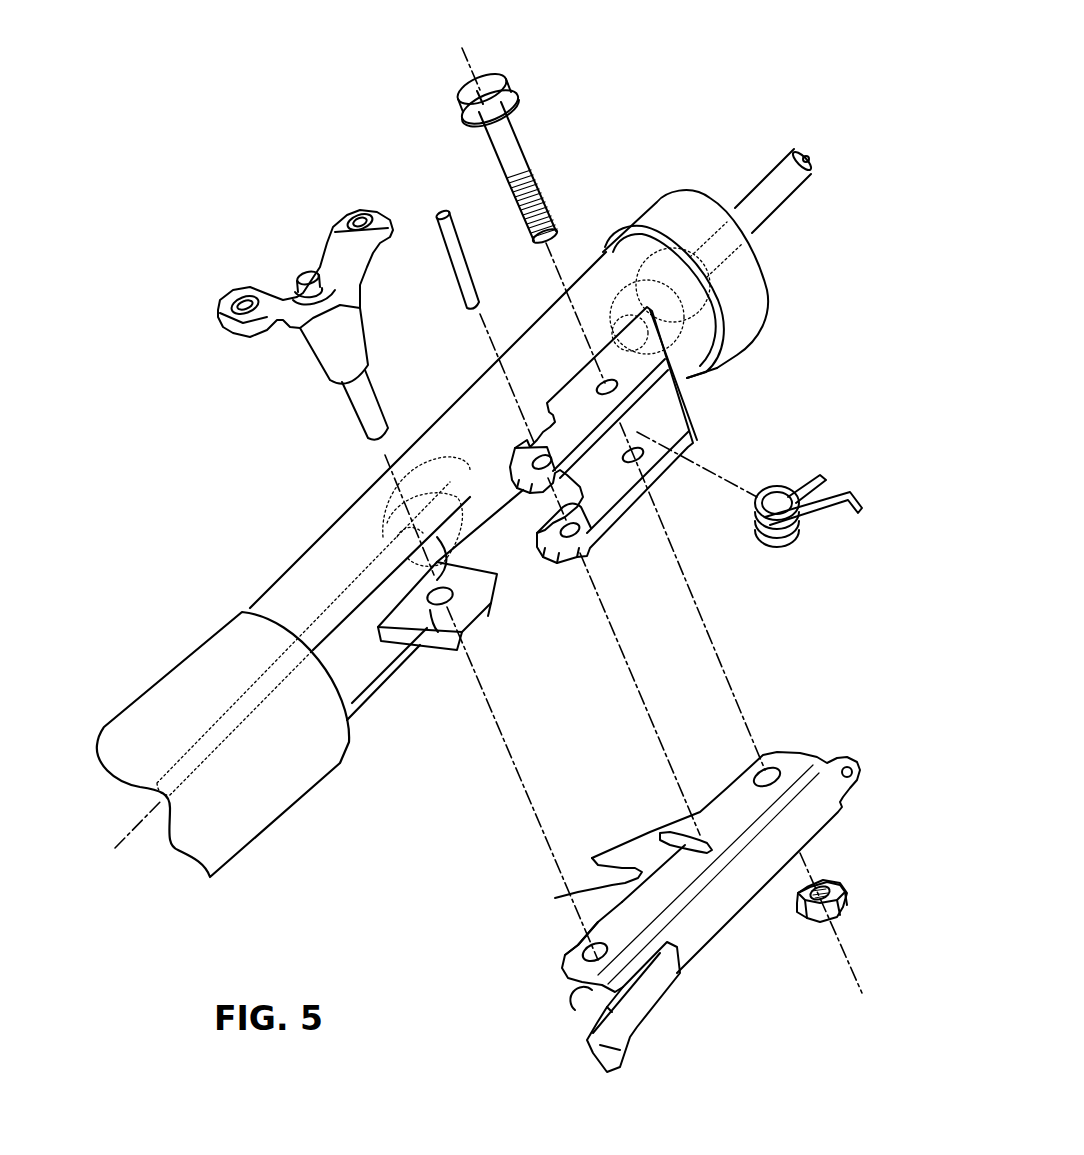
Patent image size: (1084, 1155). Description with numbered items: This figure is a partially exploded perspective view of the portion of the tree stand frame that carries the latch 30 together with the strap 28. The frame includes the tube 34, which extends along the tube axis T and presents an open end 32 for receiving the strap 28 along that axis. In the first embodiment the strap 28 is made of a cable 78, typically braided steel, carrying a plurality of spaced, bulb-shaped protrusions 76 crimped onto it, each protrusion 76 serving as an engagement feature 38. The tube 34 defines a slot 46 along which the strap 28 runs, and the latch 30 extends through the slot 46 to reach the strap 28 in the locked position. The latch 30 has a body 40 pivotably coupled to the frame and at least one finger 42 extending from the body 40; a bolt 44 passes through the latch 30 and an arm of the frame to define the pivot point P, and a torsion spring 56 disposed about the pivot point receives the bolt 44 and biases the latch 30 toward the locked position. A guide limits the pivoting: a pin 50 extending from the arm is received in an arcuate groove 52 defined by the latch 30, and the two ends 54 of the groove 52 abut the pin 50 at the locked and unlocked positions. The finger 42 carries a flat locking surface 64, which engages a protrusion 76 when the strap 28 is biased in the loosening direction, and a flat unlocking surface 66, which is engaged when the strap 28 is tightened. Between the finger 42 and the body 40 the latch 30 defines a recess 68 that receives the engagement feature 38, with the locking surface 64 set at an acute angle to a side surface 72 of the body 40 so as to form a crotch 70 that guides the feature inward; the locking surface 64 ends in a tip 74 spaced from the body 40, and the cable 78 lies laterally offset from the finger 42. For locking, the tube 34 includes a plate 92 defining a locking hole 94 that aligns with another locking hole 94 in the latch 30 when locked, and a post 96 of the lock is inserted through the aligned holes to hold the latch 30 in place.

The strap 28 is at (789, 164).
The latch 30 is at (820, 817).
The open end 32 is at (702, 178).
The tube 34 is at (455, 428).
The engagement feature 38 is at (322, 518).
The body 40 is at (660, 893).
The finger 42 is at (590, 858).
The bolt 44 is at (512, 152).
The slot 46 is at (500, 537).
The pin 50 is at (448, 232).
The groove 52 is at (537, 964).
The ends 54 is at (697, 844).
The spring 56 is at (812, 478).
The locking surface 64 is at (558, 833).
The unlocking surface 66 is at (657, 830).
The recess 68 is at (537, 964).
The crotch 70 is at (558, 833).
The side surface 72 is at (586, 912).
The tip 74 is at (558, 833).
The protrusion 76 is at (375, 517).
The cable 78 is at (803, 170).
The plate 92 is at (420, 640).
The locking hole 94 is at (435, 612).
The post 96 is at (360, 418).